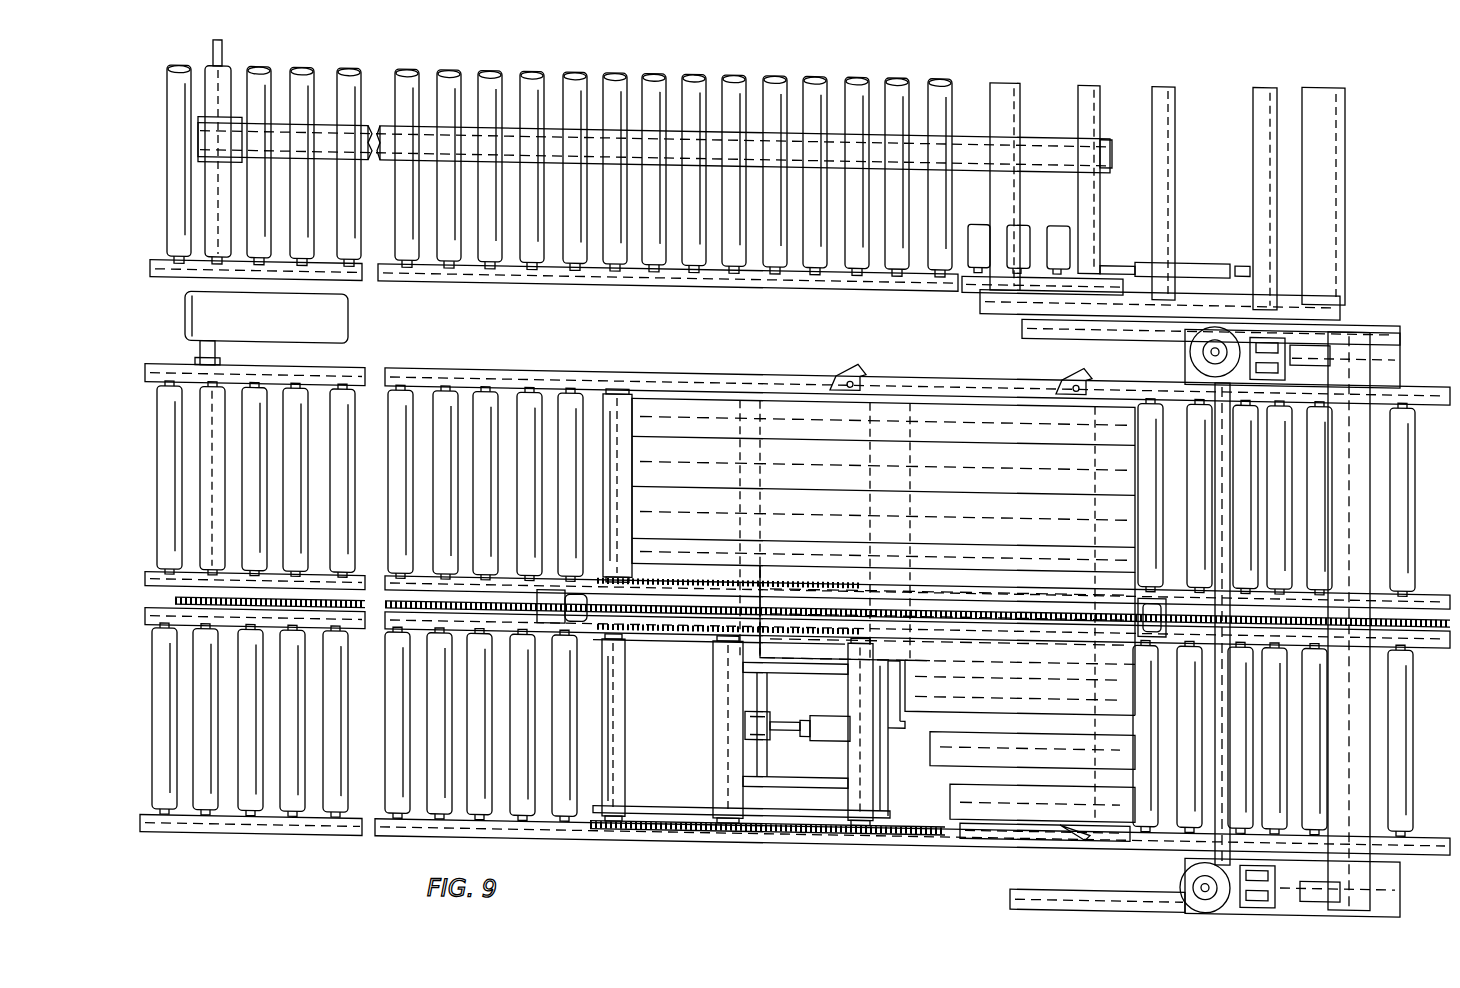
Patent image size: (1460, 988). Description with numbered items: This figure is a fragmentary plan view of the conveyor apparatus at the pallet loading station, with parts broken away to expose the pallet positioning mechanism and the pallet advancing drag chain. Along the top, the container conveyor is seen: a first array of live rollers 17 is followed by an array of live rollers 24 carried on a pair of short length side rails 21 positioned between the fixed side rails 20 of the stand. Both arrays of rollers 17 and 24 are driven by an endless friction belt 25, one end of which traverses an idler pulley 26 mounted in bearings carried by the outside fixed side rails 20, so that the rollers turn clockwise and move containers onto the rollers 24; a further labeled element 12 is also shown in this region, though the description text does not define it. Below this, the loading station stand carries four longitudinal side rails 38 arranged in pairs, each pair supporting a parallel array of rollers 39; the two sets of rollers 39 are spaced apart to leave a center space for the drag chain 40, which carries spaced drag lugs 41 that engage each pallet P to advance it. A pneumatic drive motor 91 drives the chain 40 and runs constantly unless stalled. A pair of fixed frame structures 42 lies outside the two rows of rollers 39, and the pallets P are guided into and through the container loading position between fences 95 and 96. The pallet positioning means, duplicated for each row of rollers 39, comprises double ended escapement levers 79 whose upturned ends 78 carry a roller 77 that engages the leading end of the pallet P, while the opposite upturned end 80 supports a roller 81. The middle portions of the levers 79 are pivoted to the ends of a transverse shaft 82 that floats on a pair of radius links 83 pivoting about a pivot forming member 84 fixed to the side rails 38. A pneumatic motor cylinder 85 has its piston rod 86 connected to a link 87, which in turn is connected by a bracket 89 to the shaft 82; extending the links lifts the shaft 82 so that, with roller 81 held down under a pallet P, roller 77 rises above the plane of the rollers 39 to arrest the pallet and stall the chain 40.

The drive roller 12 is at (205, 491).
The live rollers 17 is at (655, 64).
The fixed side rails 20 is at (1000, 297).
The short length side rails 21 is at (975, 272).
The live rollers 24 is at (1058, 206).
The endless friction belt 25 is at (965, 133).
The idler pulley 26 is at (1200, 246).
The longitudinal side rails 38 is at (410, 361).
The rollers 39 is at (435, 500).
The drag chain 40 is at (445, 592).
The drag lugs 41 is at (545, 602).
The fixed frame structures 42 is at (1360, 310).
The roller 77 is at (615, 481).
The upturned ends 78 is at (620, 389).
The double ended escapement levers 79 is at (710, 810).
The upturned end 80 is at (870, 794).
The roller 81 is at (855, 700).
The transverse shaft 82 is at (725, 767).
The radius links 83 is at (772, 661).
The pivot forming member 84 is at (880, 774).
The pneumatic motor cylinder 85 is at (825, 725).
The piston rod 86 is at (805, 728).
The link 87 is at (765, 701).
The bracket 89 is at (755, 716).
The drive motor 91 is at (266, 329).
The fence 95 is at (860, 370).
The fence 96 is at (1060, 811).
The pallet P is at (960, 398).